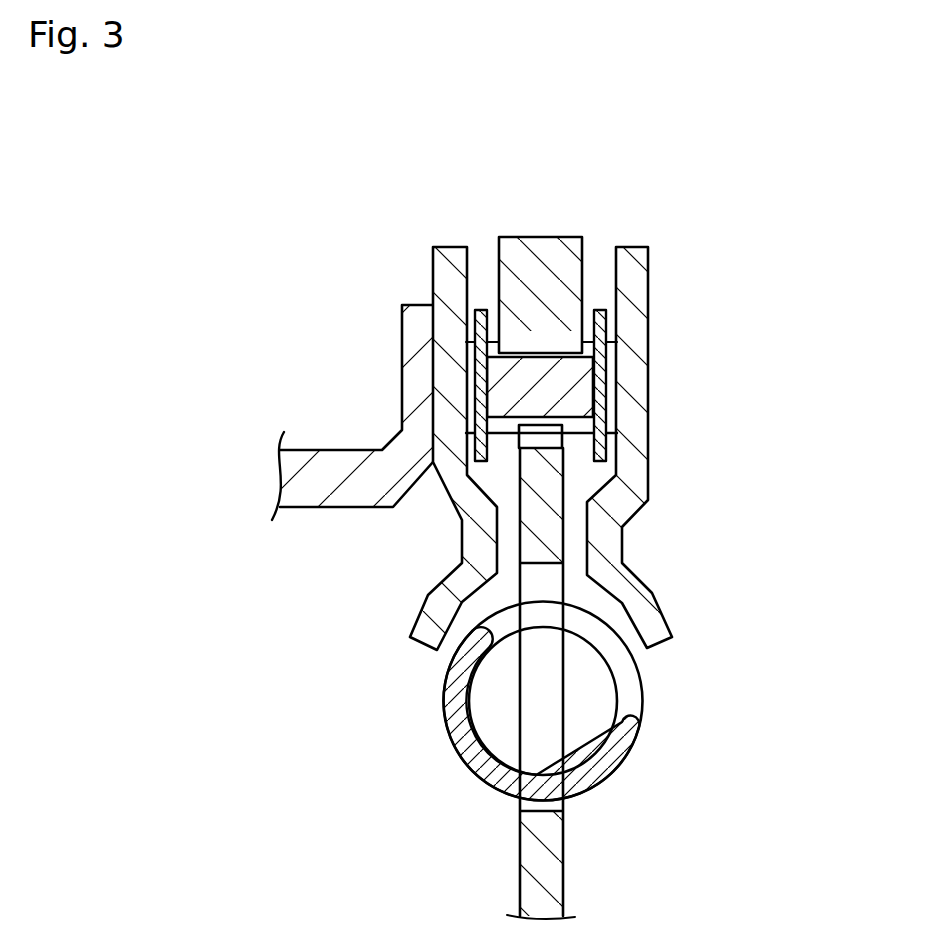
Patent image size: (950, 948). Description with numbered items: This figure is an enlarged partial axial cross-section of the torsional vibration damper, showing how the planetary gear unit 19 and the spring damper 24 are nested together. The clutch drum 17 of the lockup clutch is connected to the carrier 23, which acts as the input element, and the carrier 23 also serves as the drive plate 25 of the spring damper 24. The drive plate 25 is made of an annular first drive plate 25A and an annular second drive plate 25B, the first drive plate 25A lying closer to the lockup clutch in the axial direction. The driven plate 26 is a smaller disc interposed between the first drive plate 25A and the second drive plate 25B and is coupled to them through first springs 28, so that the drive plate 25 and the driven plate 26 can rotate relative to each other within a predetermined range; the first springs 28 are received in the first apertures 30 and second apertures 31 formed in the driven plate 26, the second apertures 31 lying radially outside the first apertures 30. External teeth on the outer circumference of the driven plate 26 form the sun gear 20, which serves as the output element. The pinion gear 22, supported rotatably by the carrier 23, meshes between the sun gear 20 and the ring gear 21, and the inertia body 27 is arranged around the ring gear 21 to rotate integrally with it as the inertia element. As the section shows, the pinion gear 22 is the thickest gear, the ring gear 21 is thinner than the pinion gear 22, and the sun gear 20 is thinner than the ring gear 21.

The clutch drum 17 is at (297, 484).
The planetary gear unit 19 is at (657, 209).
The sun gear 20 is at (528, 440).
The ring gear 21 is at (562, 336).
The pinion gear 22 is at (502, 425).
The carrier 23 is at (542, 444).
The spring damper 24 is at (681, 542).
The drive plate 25 is at (542, 444).
The first drive plate 25A is at (445, 262).
The second drive plate 25B is at (632, 258).
The driven plate 26 is at (550, 866).
The inertia body 27 is at (550, 258).
The first spring 28 is at (608, 758).
The first aperture 30 is at (399, 523).
The second aperture 31 is at (497, 716).